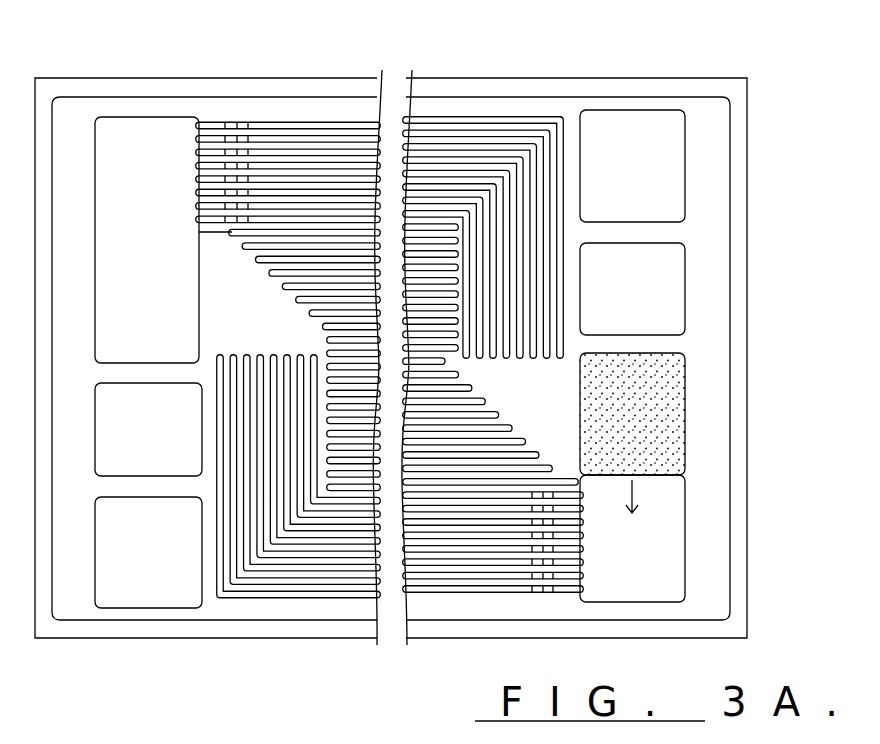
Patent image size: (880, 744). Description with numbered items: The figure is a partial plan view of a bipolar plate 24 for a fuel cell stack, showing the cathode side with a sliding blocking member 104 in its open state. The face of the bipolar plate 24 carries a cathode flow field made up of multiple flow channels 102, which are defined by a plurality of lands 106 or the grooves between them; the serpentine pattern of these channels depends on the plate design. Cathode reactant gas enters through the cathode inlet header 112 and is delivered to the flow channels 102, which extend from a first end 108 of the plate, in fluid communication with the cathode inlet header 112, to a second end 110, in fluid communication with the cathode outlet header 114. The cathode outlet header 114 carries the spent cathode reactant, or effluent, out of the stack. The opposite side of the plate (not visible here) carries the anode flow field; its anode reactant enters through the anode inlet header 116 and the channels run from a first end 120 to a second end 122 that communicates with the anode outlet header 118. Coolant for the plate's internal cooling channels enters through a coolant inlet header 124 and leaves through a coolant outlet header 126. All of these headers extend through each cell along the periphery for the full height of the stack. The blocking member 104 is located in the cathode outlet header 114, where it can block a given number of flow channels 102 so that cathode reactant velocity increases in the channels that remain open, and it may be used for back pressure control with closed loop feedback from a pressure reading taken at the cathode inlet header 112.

The bipolar plate 24 is at (799, 137).
The flow channels 102 is at (227, 115).
The blocking member 104 is at (650, 418).
The lands 106 is at (323, 128).
The first end 108 is at (199, 97).
The second end 110 is at (589, 611).
The cathode inlet header 112 is at (163, 226).
The cathode outlet header 114 is at (646, 583).
The anode inlet header 116 is at (166, 562).
The anode outlet header 118 is at (660, 180).
The first end 120 is at (204, 618).
The second end 122 is at (586, 97).
The coolant inlet header 124 is at (166, 438).
The coolant outlet header 126 is at (650, 303).